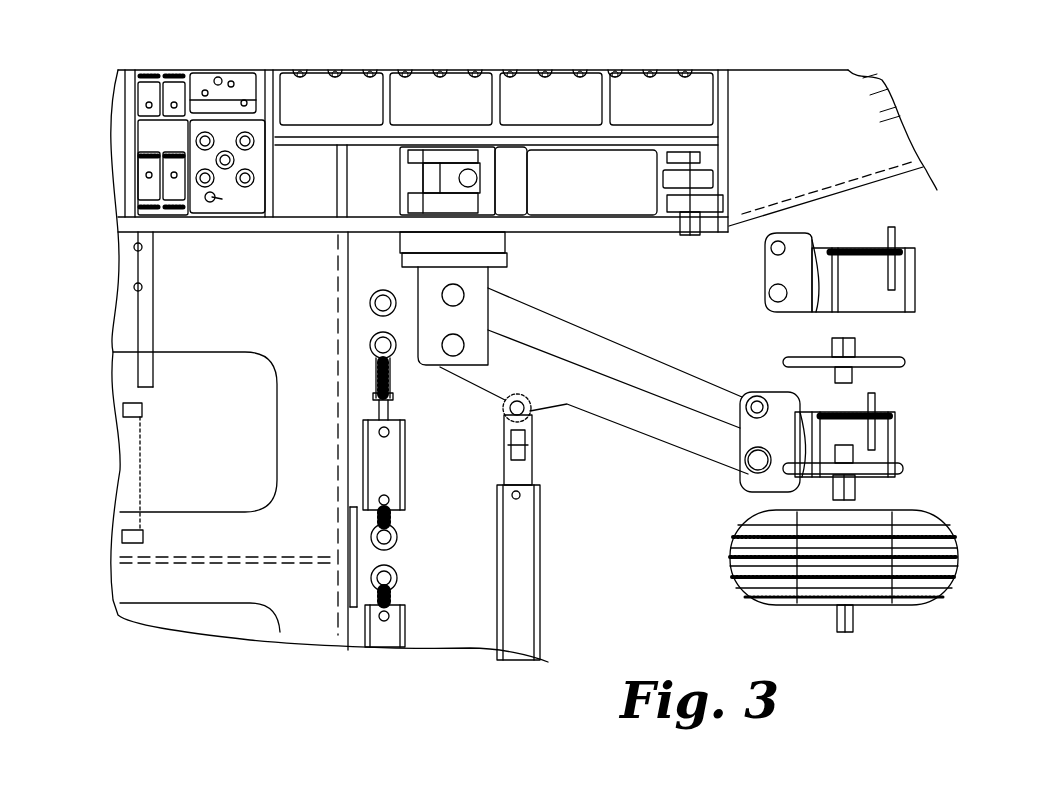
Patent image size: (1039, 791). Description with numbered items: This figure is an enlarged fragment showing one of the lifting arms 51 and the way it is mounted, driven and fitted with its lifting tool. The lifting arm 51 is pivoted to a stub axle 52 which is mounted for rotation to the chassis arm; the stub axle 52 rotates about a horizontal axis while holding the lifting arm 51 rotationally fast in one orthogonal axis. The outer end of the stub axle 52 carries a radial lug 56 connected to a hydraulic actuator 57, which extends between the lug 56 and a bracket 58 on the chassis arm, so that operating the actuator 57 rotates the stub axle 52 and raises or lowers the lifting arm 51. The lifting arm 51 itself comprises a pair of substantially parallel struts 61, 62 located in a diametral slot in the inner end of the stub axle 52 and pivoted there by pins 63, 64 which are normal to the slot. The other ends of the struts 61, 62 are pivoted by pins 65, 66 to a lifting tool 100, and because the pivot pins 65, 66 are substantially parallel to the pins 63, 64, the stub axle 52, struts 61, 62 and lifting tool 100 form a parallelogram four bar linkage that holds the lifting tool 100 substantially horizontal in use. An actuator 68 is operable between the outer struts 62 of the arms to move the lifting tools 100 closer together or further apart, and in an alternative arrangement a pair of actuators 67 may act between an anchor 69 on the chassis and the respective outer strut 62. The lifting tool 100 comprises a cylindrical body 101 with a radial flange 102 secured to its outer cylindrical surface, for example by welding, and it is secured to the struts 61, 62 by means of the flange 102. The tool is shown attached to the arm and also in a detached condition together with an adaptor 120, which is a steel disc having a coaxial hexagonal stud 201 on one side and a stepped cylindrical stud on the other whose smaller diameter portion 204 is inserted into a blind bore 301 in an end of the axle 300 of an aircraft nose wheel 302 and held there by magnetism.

The lifting arm 51 is at (651, 448).
The stub axle 52 is at (418, 280).
The radial lug 56 is at (408, 208).
The hydraulic actuator 57 is at (607, 190).
The bracket 58 is at (712, 210).
The strut 61 is at (635, 358).
The outer strut 62 is at (632, 412).
The pin 63 is at (440, 296).
The pin 64 is at (445, 345).
The pivot pin 65 is at (757, 400).
The pivot pin 66 is at (752, 470).
The actuator 67 is at (394, 468).
The actuator 68 is at (523, 617).
The anchor 69 is at (396, 560).
The lifting tool 100 is at (922, 286).
The cylindrical body 101 is at (902, 268).
The radial flange 102 is at (785, 265).
The adaptor 120 is at (905, 362).
The hexagonal stud 201 is at (850, 350).
The smaller diameter portion 204 is at (855, 380).
The axle 300 is at (930, 516).
The blind bore 301 is at (838, 508).
The aircraft nose wheel 302 is at (772, 603).